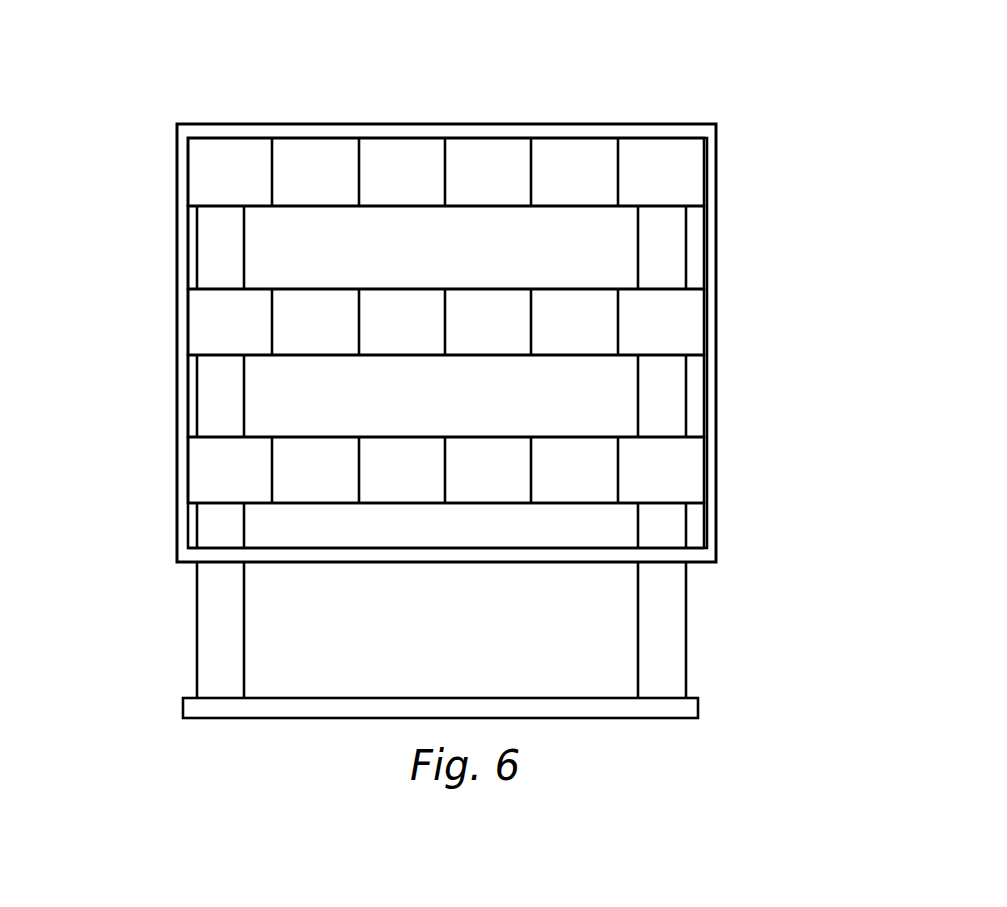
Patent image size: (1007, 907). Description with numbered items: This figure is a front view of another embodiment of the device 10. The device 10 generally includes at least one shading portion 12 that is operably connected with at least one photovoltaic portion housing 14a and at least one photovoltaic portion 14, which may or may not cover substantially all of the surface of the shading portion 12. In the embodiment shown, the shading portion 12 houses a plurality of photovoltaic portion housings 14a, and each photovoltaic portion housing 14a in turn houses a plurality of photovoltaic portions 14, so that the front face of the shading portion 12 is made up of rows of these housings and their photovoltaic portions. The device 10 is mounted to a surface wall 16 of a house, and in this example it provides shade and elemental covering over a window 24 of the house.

The device 10 is at (341, 84).
The shading portion 12 is at (649, 124).
The photovoltaic portion 14 is at (200, 182).
The photovoltaic portion housing 14a is at (188, 470).
The surface wall 16 is at (222, 629).
The window 24 is at (640, 636).